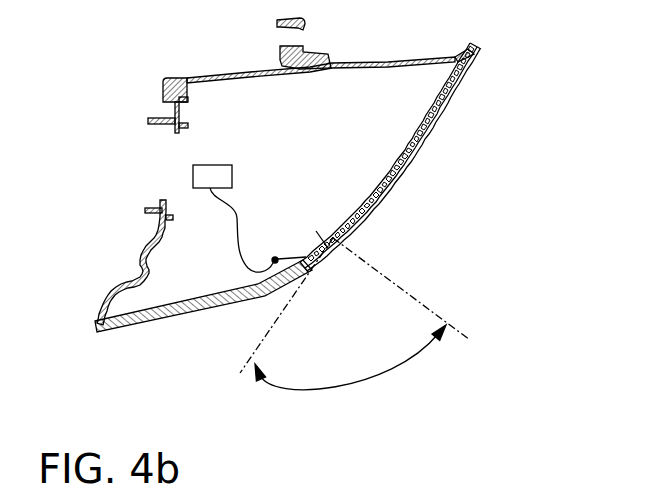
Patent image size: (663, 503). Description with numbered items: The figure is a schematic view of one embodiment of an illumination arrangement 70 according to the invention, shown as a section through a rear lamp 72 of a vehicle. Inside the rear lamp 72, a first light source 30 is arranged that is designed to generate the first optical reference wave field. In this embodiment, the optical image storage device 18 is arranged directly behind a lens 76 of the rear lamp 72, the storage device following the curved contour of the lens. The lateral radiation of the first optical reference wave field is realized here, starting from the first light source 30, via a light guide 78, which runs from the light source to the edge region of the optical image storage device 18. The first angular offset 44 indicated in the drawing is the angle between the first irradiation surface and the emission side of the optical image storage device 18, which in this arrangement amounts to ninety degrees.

The optical image storage device 18 is at (415, 125).
The first light source 30 is at (172, 174).
The first angular offset 44 is at (355, 314).
The illumination arrangement 70 is at (159, 376).
The rear lamp 72 is at (305, 302).
The lens 76 is at (408, 170).
The light guide 78 is at (276, 257).